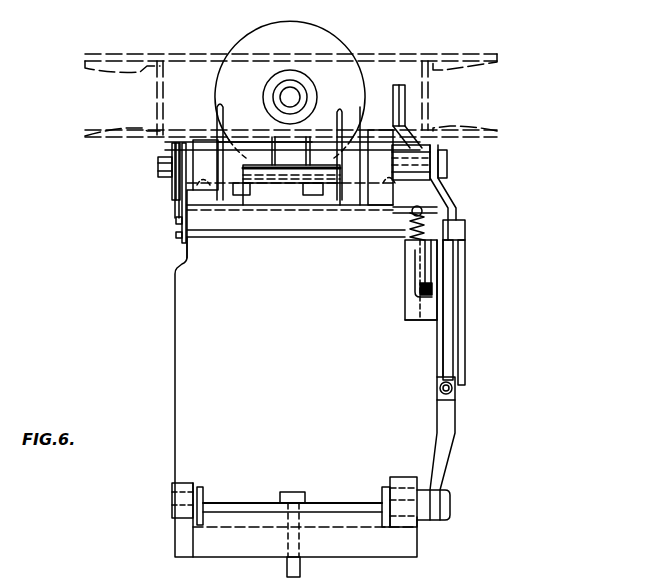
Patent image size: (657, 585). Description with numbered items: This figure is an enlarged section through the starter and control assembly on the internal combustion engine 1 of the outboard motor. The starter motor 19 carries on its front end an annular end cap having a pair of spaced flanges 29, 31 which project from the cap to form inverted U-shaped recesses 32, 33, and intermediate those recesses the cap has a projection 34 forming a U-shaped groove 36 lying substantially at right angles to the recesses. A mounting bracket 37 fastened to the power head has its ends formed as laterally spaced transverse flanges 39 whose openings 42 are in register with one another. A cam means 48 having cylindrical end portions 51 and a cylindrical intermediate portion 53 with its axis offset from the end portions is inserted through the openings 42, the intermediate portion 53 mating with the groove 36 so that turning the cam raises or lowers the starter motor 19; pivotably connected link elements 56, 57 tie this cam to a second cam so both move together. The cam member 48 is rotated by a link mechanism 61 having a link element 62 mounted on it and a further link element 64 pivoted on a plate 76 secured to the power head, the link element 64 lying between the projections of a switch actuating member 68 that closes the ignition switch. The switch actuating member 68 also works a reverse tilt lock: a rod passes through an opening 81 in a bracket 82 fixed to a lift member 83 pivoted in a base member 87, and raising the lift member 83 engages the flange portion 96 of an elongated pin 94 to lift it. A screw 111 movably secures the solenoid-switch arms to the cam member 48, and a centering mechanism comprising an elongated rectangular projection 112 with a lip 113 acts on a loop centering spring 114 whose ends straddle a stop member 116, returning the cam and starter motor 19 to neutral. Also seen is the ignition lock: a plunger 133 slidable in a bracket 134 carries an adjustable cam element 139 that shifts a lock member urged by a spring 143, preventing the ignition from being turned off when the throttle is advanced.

The internal combustion engine 1 is at (182, 354).
The starter motor 19 is at (322, 37).
The flange 29 is at (235, 190).
The flange 31 is at (348, 186).
The inverted U-shaped recess 32 is at (245, 150).
The inverted U-shaped recess 33 is at (330, 147).
The projection 34 is at (290, 190).
The U-shaped groove 36 is at (315, 177).
The mounting bracket 37 is at (358, 226).
The transverse flange 39 is at (208, 147).
The opening 42 is at (398, 184).
The cam means 48 is at (272, 176).
The cylindrical end portion 51 is at (443, 165).
The cylindrical intermediate portion 53 is at (285, 180).
The link element 56 is at (410, 137).
The link element 57 is at (407, 93).
The link mechanism 61 is at (460, 295).
The link element 62 is at (448, 198).
The link element 64 is at (452, 285).
The switch actuating member 68 is at (443, 355).
The plate 76 is at (438, 320).
The opening 81 is at (452, 392).
The bracket 82 is at (450, 422).
The lift member 83 is at (340, 505).
The base member 87 is at (408, 542).
The elongated pin 94 is at (300, 566).
The flange portion 96 is at (293, 495).
The screw 111 is at (160, 168).
The elongated rectangular projection 112 is at (175, 208).
The lip 113 is at (183, 219).
The loop centering spring 114 is at (180, 155).
The stop member 116 is at (174, 231).
The plunger 133 is at (412, 253).
The bracket 134 is at (410, 258).
The cam element 139 is at (380, 143).
The spring 143 is at (422, 290).